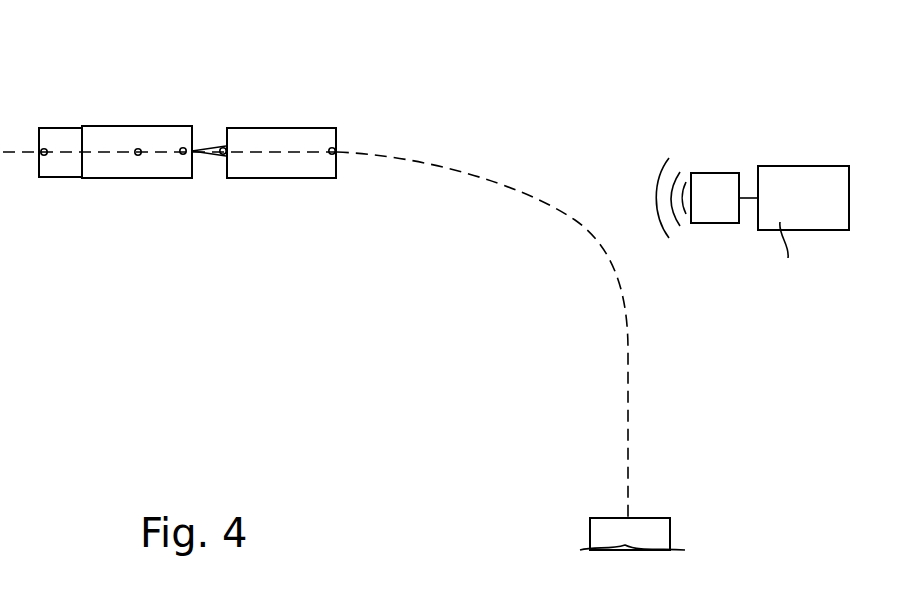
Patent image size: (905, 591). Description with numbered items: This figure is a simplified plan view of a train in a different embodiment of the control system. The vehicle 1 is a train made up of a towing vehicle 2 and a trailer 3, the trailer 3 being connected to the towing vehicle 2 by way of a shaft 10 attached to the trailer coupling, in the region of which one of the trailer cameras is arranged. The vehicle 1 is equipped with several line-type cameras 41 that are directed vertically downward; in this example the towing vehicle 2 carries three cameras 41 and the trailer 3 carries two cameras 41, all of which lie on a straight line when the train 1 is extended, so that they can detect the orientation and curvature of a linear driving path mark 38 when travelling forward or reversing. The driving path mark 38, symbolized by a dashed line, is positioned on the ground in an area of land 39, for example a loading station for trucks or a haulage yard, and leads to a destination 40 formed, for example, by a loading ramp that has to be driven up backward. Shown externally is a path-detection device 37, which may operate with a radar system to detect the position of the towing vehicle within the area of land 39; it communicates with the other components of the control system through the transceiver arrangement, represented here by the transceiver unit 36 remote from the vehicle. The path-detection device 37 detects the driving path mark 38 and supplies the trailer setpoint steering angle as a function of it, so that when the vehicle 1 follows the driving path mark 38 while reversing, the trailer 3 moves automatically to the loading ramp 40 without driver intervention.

The vehicle 1 is at (120, 128).
The towing vehicle 2 is at (152, 125).
The trailer 3 is at (293, 126).
The shaft 10 is at (212, 160).
The transceiver unit 36 is at (730, 209).
The path-detection device 37 is at (818, 207).
The driving path mark 38 is at (560, 208).
The area of land 39 is at (294, 330).
The destination 40 is at (633, 533).
The camera 41 is at (44, 149).